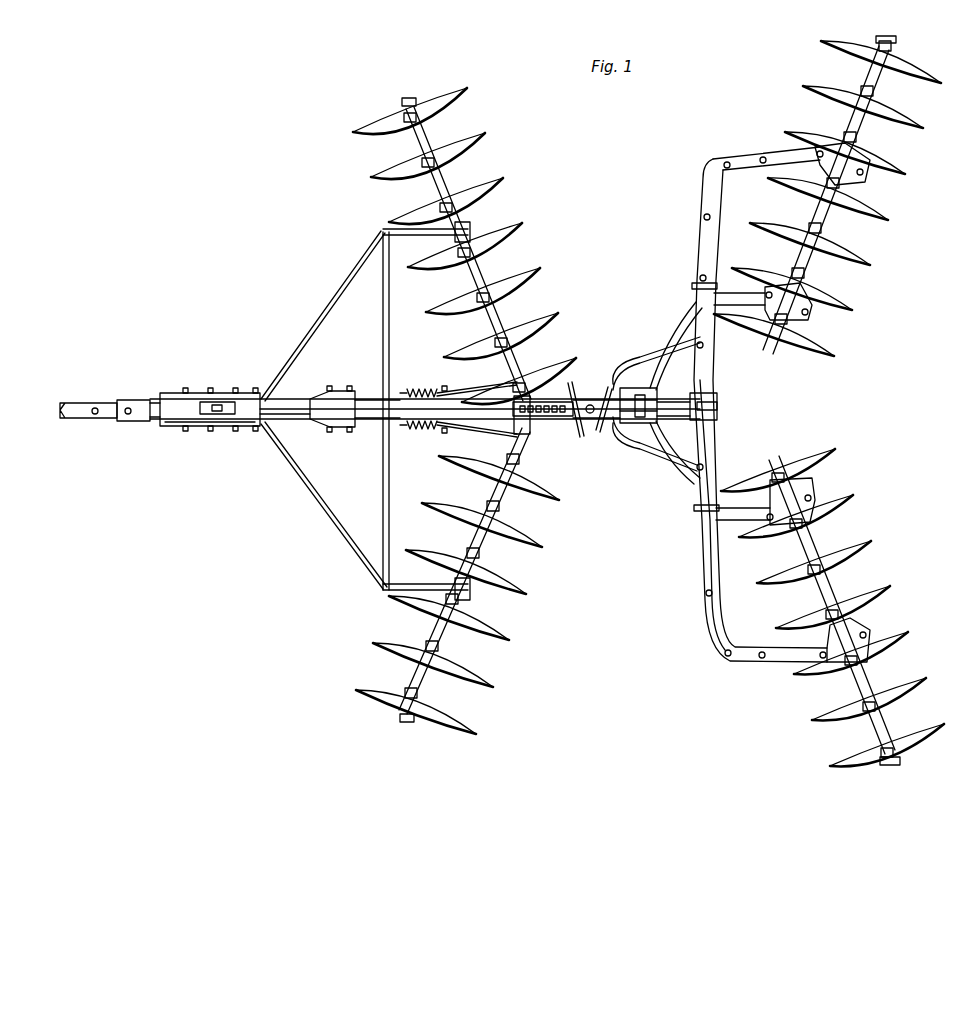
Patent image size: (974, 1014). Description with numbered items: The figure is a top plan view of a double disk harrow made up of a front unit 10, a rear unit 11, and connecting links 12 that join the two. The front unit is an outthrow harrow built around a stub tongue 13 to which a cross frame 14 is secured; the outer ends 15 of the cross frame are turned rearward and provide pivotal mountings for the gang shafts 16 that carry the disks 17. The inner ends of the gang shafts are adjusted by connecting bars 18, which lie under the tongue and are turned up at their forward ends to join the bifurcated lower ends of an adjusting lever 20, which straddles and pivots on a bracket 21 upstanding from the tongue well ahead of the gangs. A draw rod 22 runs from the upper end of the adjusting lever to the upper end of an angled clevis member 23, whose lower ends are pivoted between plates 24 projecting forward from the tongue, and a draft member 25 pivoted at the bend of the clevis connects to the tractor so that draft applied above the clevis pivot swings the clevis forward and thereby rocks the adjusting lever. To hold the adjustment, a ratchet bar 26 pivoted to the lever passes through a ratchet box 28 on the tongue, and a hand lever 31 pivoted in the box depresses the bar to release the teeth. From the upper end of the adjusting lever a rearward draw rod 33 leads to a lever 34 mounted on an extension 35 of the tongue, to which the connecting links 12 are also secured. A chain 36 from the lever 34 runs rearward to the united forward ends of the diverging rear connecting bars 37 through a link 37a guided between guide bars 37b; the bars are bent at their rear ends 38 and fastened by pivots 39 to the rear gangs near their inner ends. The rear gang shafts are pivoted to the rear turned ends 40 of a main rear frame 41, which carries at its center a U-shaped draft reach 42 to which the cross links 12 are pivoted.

The front unit 10 is at (457, 246).
The rear unit 11 is at (829, 401).
The connecting links 12 is at (598, 390).
The stub tongue 13 is at (288, 399).
The cross frame 14 is at (381, 316).
The outer ends of cross frame 15 is at (400, 236).
The gang shafts 16 is at (490, 265).
The disks 17 is at (496, 190).
The connecting bars 18 is at (463, 391).
The adjusting lever 20 is at (341, 391).
The bracket 21 is at (341, 432).
The draw rod 22 is at (292, 421).
The clevis member 23 is at (168, 393).
The plates 24 is at (206, 392).
The draft member 25 is at (140, 421).
The ratchet bar 26 is at (176, 426).
The ratchet box 28 is at (226, 428).
The hand lever 31 is at (233, 399).
The draw rod 33 is at (418, 390).
The lever 34 is at (527, 434).
The extension 35 is at (541, 400).
The chain 36 is at (591, 392).
The rear connecting bars 37 is at (652, 380).
The link 37a is at (586, 432).
The guide bars 37b is at (667, 400).
The rear ends of connecting bars 38 is at (765, 312).
The pivots 39 is at (760, 291).
The rear turned ends 40 is at (775, 170).
The main rear frame 41 is at (742, 410).
The draft reach 42 is at (626, 440).